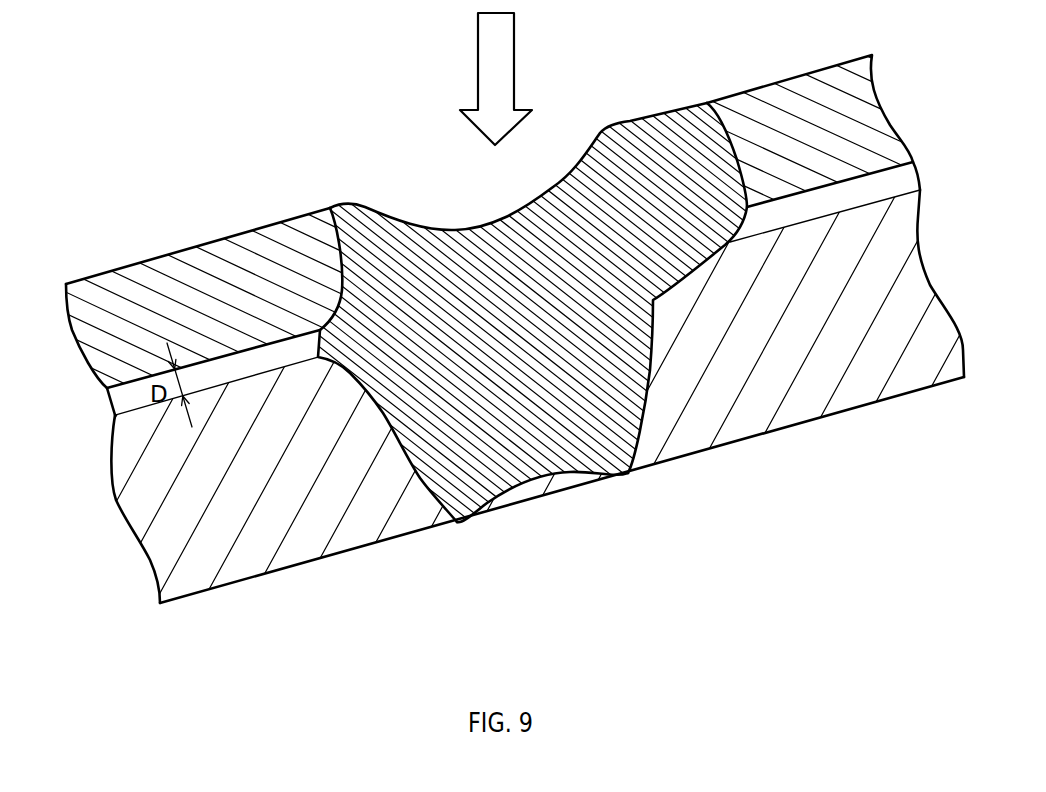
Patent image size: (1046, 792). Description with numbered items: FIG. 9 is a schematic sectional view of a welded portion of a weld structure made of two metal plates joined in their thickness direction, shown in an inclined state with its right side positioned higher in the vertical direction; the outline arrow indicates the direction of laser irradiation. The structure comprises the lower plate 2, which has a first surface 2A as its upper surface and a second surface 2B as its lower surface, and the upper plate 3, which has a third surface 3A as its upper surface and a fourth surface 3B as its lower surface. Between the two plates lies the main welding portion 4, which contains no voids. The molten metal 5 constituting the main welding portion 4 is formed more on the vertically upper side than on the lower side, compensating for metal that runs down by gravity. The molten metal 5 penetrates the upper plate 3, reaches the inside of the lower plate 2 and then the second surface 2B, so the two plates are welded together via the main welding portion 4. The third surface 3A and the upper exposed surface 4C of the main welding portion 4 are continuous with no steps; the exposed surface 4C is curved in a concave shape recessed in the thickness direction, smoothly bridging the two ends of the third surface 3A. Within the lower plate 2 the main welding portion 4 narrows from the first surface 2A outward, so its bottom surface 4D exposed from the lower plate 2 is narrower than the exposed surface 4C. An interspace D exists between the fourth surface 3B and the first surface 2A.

The lower plate 2 is at (140, 512).
The first surface 2A is at (263, 363).
The second surface 2B is at (243, 586).
The upper plate 3 is at (100, 337).
The third surface 3A is at (277, 224).
The fourth surface 3B is at (238, 364).
The main welding portion 4 is at (612, 405).
The exposed surface 4C is at (495, 219).
The bottom surface 4D is at (534, 482).
The molten metal 5 is at (667, 153).